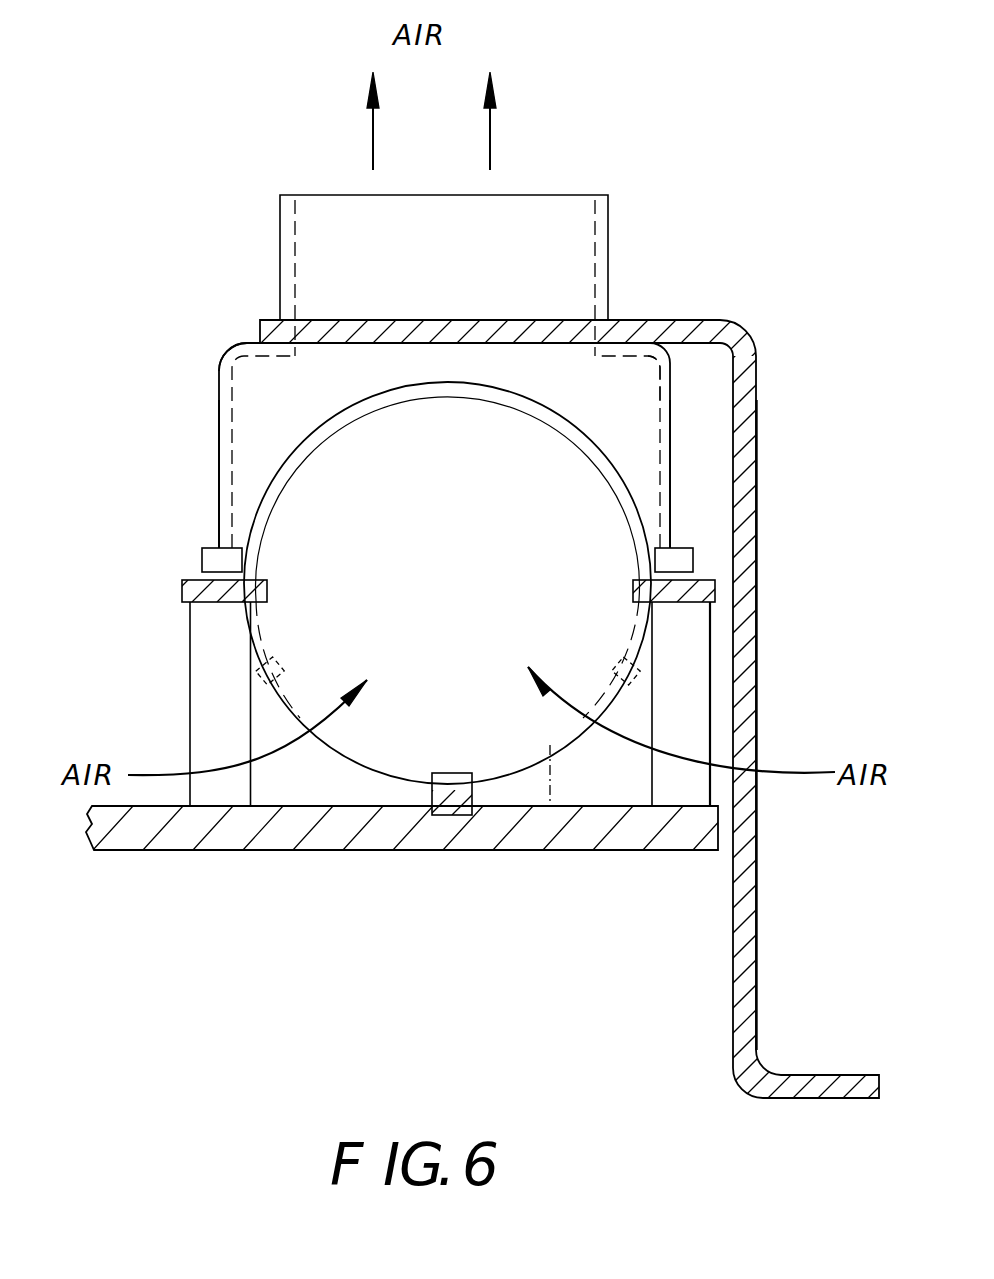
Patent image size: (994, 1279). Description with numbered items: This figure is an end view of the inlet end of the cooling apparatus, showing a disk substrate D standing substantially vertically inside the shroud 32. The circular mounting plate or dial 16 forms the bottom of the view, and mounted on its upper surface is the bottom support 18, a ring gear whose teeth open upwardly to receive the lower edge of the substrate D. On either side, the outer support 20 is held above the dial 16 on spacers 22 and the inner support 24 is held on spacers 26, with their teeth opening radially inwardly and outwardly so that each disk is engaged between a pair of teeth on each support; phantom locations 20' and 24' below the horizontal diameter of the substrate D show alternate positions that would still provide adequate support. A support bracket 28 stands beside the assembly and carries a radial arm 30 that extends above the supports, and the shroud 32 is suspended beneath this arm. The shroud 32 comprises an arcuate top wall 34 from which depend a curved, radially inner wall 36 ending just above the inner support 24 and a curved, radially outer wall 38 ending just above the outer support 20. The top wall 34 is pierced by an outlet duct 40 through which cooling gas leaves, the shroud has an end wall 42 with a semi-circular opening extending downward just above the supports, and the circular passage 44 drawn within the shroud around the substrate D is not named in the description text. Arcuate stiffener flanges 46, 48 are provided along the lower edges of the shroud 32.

The dial 16 is at (345, 830).
The bottom support 18 is at (452, 812).
The outer support 20 is at (723, 578).
The alternate outer support location 20' is at (587, 648).
The spacers 22 is at (687, 690).
The inner support 24 is at (194, 589).
The alternate inner support location 24' is at (314, 648).
The spacers 26 is at (203, 722).
The support bracket 28 is at (755, 515).
The radial arm 30 is at (632, 320).
The shroud 32 is at (212, 385).
The top wall 34 is at (250, 343).
The radially inner wall 36 is at (222, 472).
The radially outer wall 38 is at (668, 438).
The outlet duct 40 is at (468, 270).
The end wall 42 is at (640, 380).
The cylindrical filter 44 is at (293, 452).
The stiffener flange 46 is at (206, 560).
The stiffener flange 48 is at (680, 560).
The disk substrate D is at (550, 806).